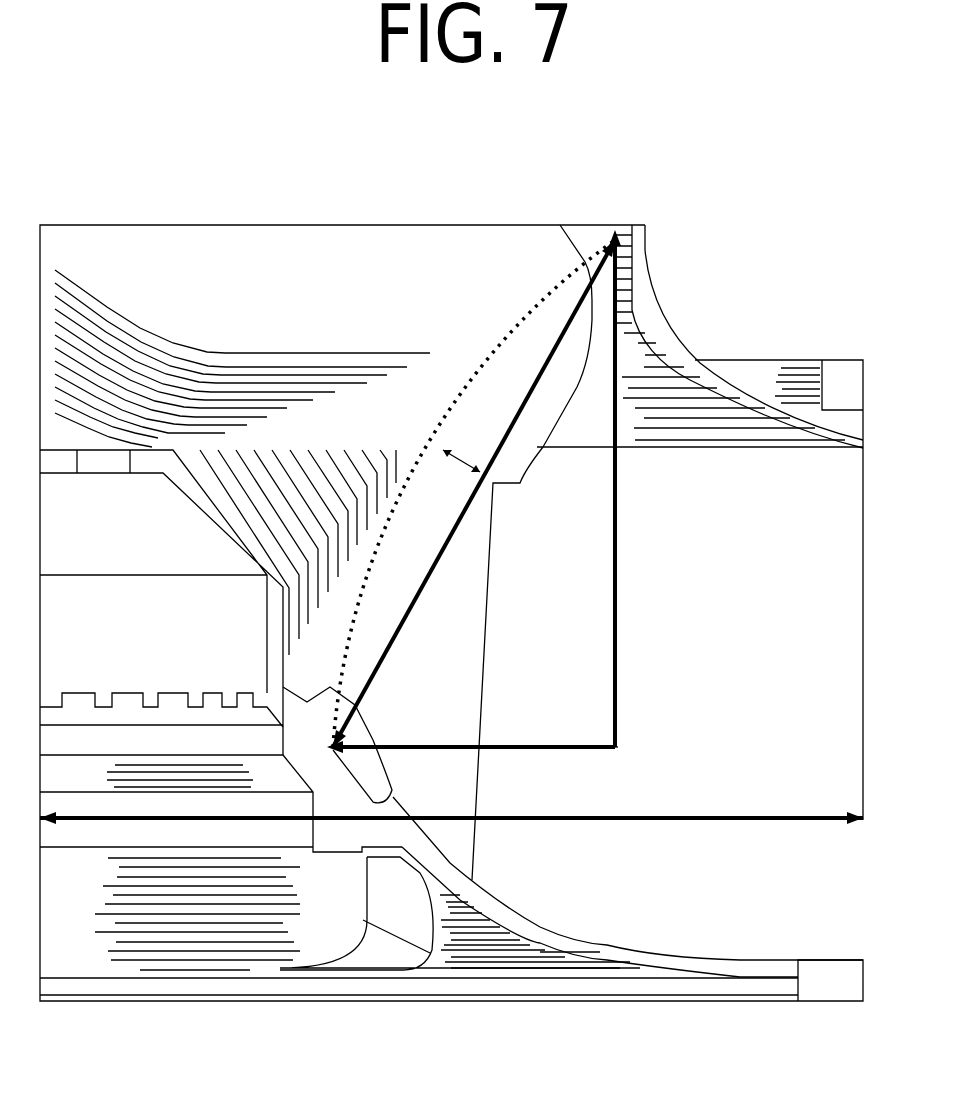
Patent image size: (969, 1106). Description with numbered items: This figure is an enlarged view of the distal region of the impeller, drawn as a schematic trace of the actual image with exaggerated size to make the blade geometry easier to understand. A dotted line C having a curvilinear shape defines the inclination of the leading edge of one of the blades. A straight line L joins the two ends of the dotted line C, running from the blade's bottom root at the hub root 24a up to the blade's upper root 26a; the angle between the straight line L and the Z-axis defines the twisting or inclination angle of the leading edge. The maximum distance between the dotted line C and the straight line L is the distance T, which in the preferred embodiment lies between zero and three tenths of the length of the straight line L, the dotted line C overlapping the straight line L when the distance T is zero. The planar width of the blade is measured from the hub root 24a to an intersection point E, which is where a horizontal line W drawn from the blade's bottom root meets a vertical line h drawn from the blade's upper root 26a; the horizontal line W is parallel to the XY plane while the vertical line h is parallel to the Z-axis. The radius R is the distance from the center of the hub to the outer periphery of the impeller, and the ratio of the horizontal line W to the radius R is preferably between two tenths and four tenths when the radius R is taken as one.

The hub root 24a is at (375, 803).
The blade's upper root 26a is at (613, 228).
The vertical line h is at (625, 488).
The horizontal line W is at (471, 736).
The straight line L is at (474, 493).
The radius R is at (451, 804).
The dotted line C is at (474, 493).
The distance T is at (457, 472).
The intersection point E is at (627, 762).